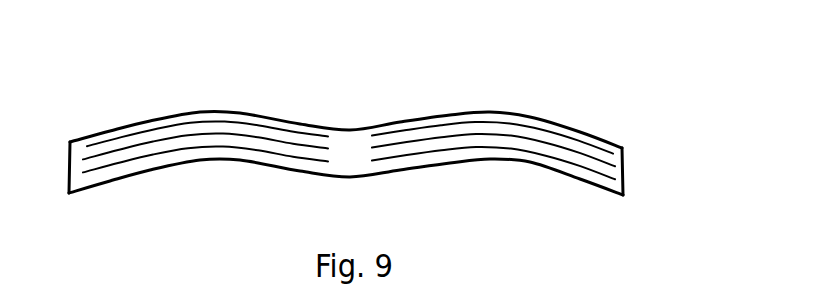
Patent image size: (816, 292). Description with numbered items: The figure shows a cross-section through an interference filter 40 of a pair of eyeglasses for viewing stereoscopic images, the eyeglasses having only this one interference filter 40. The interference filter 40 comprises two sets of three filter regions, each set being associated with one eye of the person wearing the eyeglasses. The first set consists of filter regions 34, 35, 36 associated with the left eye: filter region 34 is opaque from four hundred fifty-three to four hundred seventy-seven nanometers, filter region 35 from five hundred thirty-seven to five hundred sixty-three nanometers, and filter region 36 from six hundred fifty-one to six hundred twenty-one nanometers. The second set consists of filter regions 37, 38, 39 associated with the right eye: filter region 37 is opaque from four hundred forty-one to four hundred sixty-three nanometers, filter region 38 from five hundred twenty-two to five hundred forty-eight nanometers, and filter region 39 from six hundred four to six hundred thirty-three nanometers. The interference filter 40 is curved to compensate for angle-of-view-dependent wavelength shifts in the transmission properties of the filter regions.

The filter region 34 is at (232, 120).
The filter region 35 is at (167, 133).
The filter region 36 is at (215, 146).
The filter region 37 is at (552, 128).
The filter region 38 is at (478, 133).
The filter region 39 is at (532, 151).
The interference filter 40 is at (492, 83).